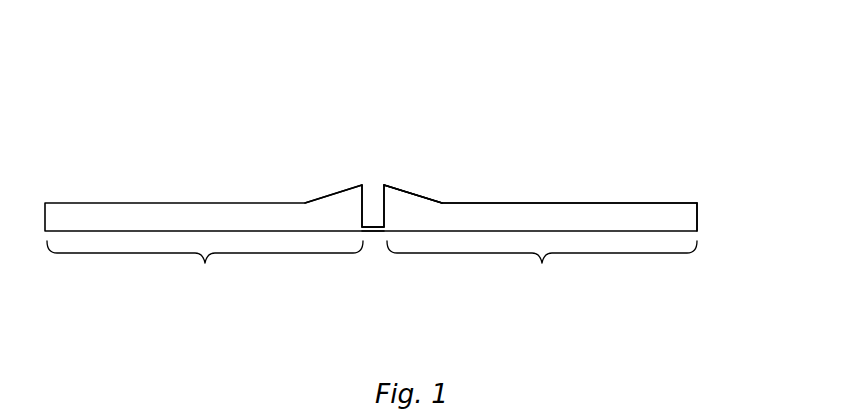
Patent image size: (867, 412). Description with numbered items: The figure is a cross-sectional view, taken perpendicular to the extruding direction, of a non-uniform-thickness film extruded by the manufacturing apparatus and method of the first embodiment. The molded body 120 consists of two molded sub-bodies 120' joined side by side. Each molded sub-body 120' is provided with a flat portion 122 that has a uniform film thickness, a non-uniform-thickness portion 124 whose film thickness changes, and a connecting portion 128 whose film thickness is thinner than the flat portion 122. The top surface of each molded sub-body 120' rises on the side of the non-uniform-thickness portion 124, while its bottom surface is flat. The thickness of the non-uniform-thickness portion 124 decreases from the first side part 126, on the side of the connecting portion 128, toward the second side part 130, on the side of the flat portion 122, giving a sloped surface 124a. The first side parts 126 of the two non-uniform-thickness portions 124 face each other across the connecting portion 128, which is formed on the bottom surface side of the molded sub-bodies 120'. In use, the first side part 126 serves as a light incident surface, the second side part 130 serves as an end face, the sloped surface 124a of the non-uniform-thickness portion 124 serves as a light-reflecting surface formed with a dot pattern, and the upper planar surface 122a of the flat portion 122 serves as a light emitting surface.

The molded body 120 is at (414, 176).
The molded sub-body 120' is at (372, 270).
The flat portion 122 is at (547, 213).
The upper planar surface of the flat portion 122a is at (635, 202).
The non-uniform-thickness portion 124 is at (399, 208).
The sloped surface 124a is at (424, 199).
The first side part 126 is at (380, 206).
The connecting portion 128 is at (373, 231).
The second side part 130 is at (697, 217).